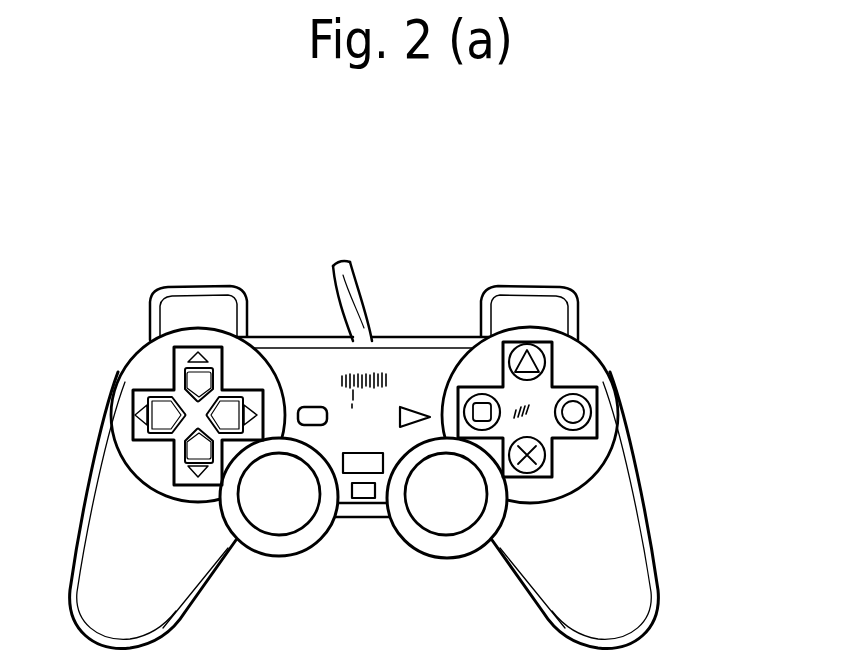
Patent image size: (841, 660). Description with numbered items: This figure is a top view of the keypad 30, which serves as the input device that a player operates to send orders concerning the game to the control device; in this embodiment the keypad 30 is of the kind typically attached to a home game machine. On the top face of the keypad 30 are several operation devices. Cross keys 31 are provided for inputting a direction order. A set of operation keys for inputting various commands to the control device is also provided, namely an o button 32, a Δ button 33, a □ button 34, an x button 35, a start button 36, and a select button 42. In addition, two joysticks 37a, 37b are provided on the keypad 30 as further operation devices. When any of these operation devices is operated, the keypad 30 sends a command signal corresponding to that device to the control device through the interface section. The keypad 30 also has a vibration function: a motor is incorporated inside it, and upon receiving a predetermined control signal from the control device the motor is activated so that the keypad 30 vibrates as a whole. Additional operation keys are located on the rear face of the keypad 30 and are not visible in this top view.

The keypad 30 is at (658, 366).
The cross keys 31 is at (225, 413).
The o button 32 is at (575, 409).
The Δ button 33 is at (530, 358).
The □ button 34 is at (481, 408).
The x button 35 is at (540, 453).
The start button 36 is at (410, 407).
The joystick 37a is at (278, 500).
The joystick 37b is at (450, 500).
The select button 42 is at (313, 407).